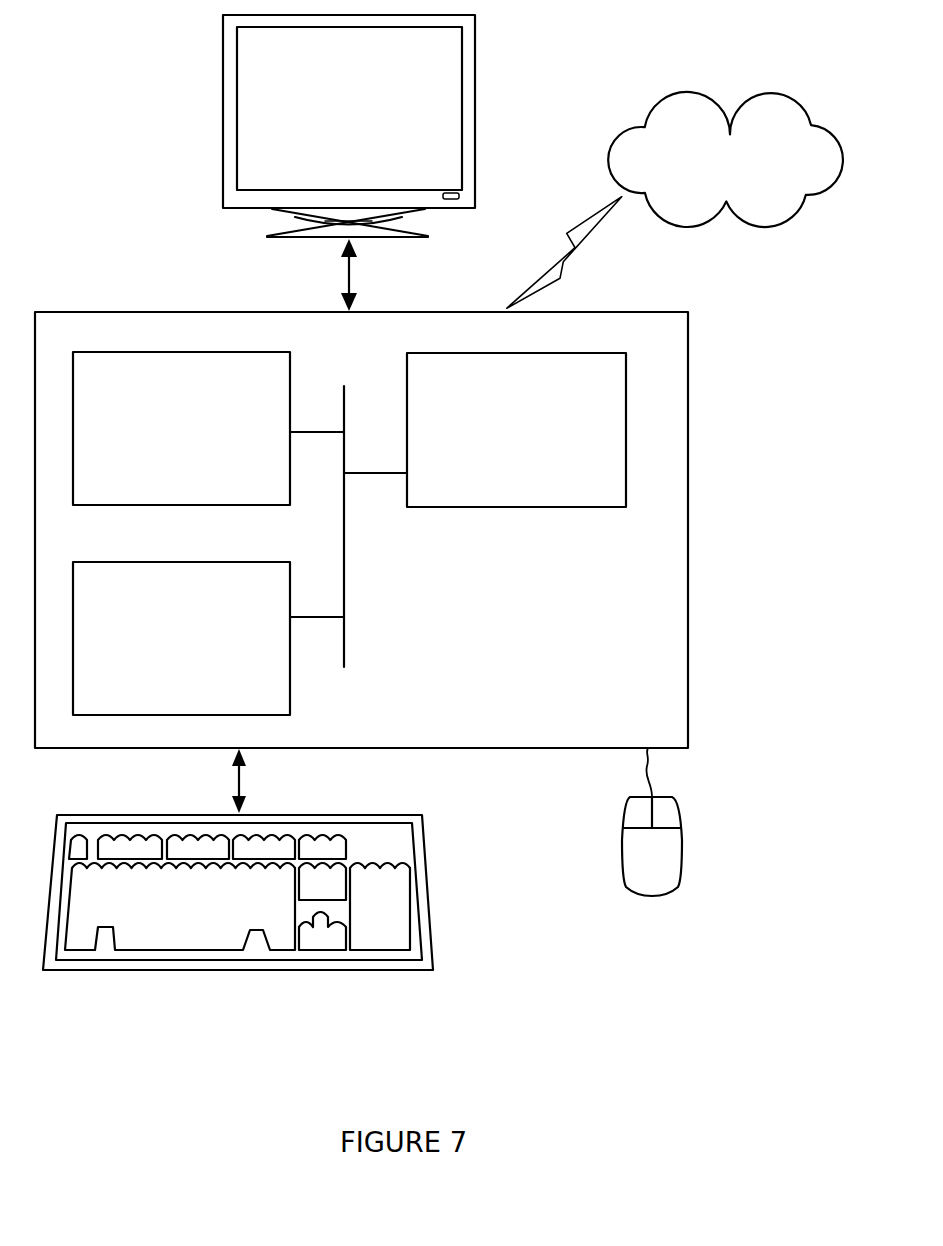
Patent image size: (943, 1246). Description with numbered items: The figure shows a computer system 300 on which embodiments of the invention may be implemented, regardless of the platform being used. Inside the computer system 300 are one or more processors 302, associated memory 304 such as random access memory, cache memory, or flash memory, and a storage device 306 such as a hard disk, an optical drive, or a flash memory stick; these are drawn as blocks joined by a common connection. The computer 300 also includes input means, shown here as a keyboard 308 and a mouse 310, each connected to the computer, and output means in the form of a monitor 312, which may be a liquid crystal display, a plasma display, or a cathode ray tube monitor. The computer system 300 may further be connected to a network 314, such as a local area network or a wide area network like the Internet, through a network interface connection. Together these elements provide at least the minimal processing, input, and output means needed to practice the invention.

The computer system 300 is at (744, 321).
The processor 302 is at (487, 440).
The memory 304 is at (160, 441).
The storage device 306 is at (157, 652).
The keyboard 308 is at (152, 930).
The mouse 310 is at (631, 868).
The monitor 312 is at (327, 134).
The network 314 is at (706, 176).